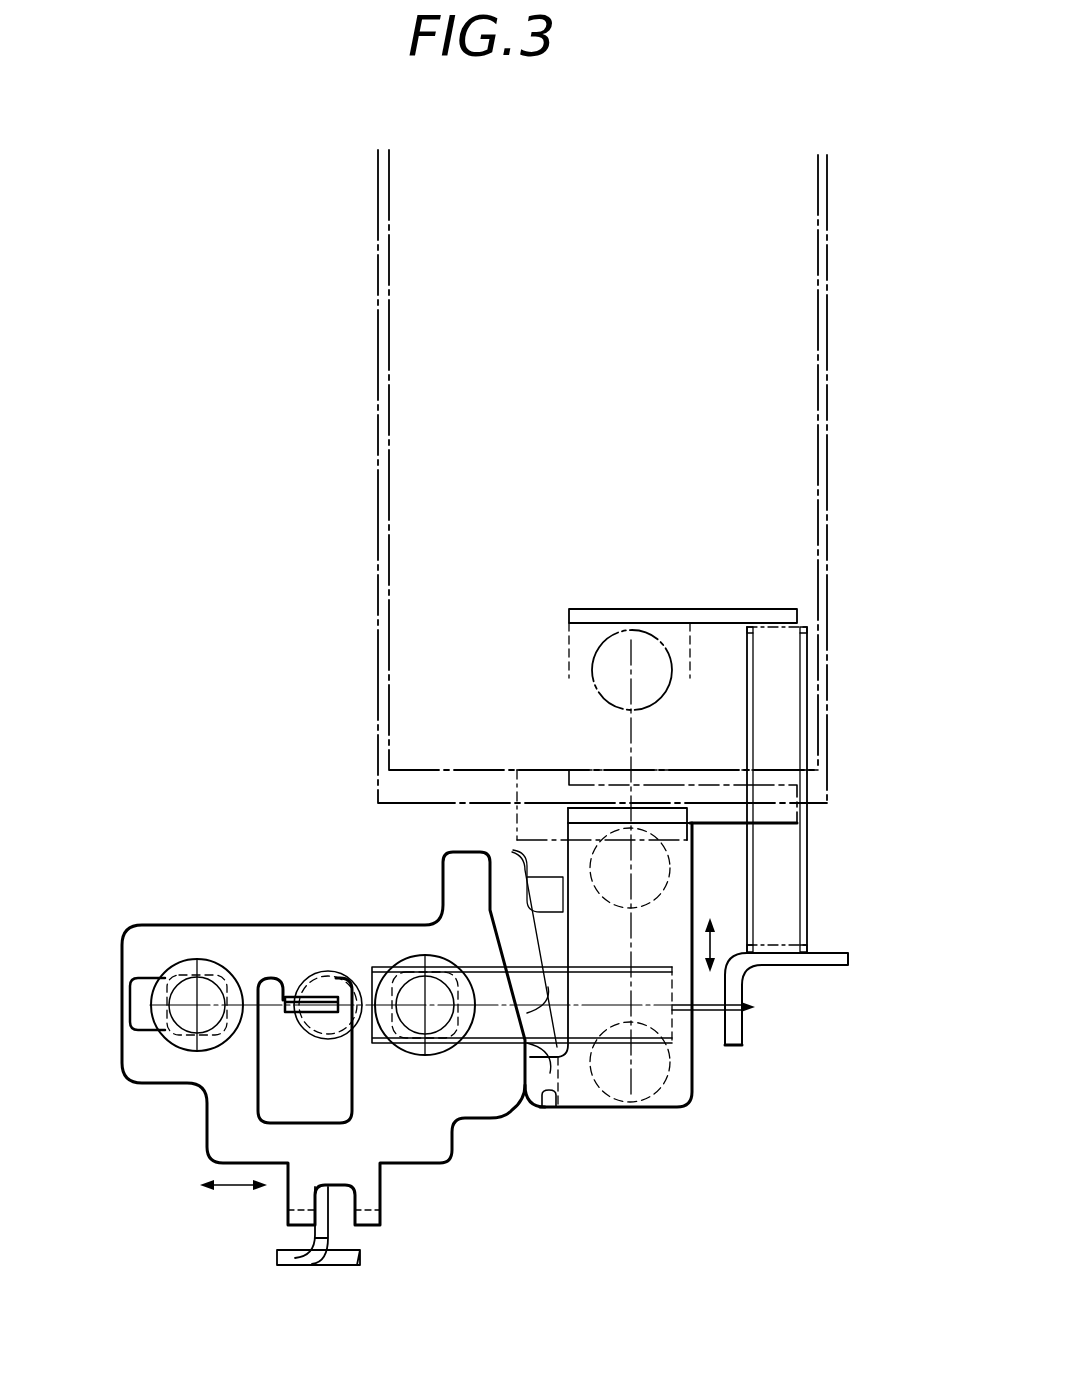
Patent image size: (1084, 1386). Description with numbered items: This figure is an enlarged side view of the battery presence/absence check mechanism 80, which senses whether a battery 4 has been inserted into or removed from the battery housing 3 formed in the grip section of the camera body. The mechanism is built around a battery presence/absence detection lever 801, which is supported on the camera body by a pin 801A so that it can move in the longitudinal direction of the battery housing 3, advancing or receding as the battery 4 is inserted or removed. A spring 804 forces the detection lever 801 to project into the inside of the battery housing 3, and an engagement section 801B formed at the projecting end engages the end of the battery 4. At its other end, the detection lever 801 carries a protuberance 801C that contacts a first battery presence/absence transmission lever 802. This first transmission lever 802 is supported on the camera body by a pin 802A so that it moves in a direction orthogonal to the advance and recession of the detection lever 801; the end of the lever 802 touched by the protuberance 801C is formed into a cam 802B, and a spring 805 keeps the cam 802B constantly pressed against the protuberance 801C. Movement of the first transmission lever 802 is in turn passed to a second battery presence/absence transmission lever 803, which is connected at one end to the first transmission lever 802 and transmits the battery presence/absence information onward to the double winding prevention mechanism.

The battery housing 3 is at (803, 405).
The battery 4 is at (803, 253).
The battery presence/absence check mechanism 80 is at (714, 1108).
The battery presence/absence detection lever 801 is at (677, 903).
The pin 801A is at (672, 862).
The engagement section 801B is at (640, 608).
The protuberance 801C is at (548, 890).
The first battery presence/absence transmission lever 802 is at (252, 938).
The pin 802A is at (180, 962).
The cam 802B is at (522, 1030).
The second battery presence/absence transmission lever 803 is at (295, 1272).
The spring 804 is at (810, 921).
The spring 805 is at (545, 1100).